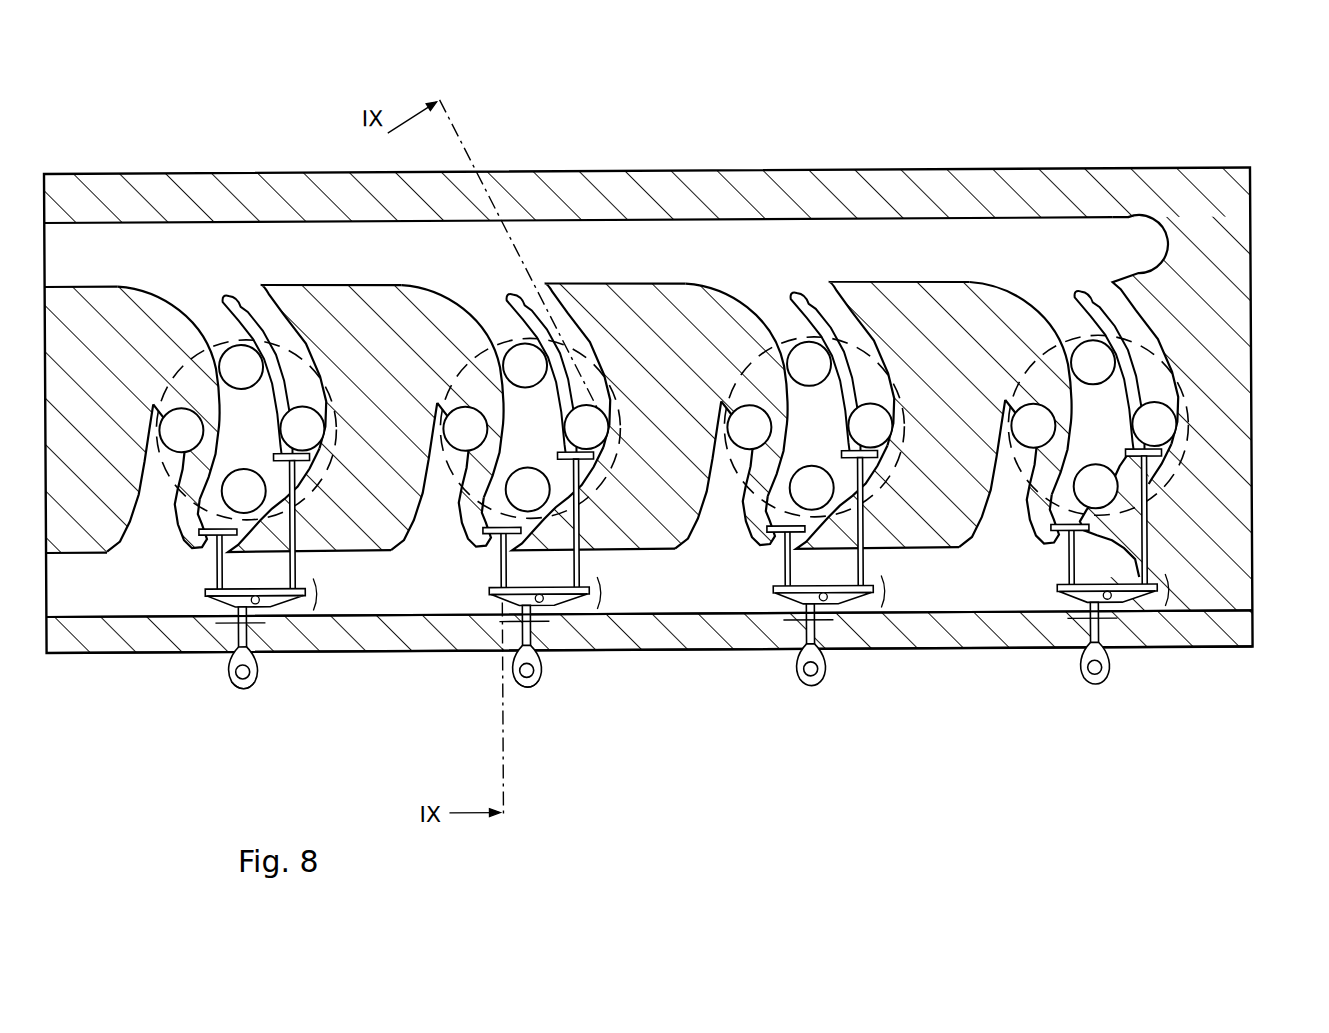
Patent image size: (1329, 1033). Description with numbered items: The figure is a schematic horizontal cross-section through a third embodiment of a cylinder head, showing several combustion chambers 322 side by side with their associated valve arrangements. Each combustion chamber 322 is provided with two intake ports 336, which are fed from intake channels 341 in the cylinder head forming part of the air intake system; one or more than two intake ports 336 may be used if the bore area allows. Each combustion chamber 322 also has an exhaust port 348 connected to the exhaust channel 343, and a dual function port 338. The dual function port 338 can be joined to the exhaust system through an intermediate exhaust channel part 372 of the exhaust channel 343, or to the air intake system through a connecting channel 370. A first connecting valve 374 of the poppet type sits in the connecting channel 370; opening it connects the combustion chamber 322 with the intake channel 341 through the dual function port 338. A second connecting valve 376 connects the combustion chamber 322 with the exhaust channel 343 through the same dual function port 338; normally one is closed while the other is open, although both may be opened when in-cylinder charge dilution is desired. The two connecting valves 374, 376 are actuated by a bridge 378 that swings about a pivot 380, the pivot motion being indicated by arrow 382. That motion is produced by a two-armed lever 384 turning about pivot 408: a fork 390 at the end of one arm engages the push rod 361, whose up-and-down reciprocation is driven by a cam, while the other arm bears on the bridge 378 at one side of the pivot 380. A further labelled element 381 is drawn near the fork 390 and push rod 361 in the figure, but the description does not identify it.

The combustion chamber 322 is at (287, 347).
The intake port 336 is at (1165, 441).
The dual function port 338 is at (1106, 503).
The intake channel 341 is at (275, 258).
The exhaust channel 343 is at (144, 508).
The exhaust port 348 is at (1044, 442).
The push rod 361 is at (239, 681).
The connecting channel 370 is at (318, 487).
The intermediate exhaust channel part 372 is at (180, 542).
The first connecting valve 374 is at (262, 440).
The second connecting valve 376 is at (203, 552).
The bridge 378 is at (277, 596).
The pivot 380 is at (256, 606).
The fork 381 is at (229, 657).
The arrow 382 is at (313, 600).
The lever 384 is at (250, 645).
The fork 390 is at (223, 677).
The pivot 408 is at (215, 625).